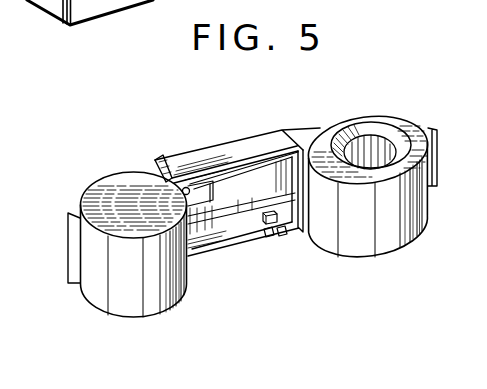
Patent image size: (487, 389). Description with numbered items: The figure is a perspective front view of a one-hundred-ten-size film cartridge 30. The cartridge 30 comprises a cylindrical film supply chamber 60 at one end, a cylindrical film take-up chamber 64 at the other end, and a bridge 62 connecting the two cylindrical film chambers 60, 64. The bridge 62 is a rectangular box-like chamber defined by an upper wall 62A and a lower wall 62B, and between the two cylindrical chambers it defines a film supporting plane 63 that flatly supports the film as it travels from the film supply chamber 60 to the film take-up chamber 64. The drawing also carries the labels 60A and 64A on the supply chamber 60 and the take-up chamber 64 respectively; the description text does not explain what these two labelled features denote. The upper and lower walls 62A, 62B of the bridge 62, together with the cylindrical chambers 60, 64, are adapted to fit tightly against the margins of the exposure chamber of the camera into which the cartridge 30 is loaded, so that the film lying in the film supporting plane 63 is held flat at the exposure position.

The 110-size film cartridge 30 is at (194, 142).
The cylindrical film supply chamber 60 is at (83, 192).
The projection on boss 60A is at (156, 181).
The bridge 62 is at (221, 144).
The upper wall 62A is at (249, 161).
The lower wall 62B is at (252, 228).
The film supporting plane 63 is at (226, 178).
The cylindrical film take-up chamber 64 is at (363, 117).
The bore of boss 64A is at (311, 163).